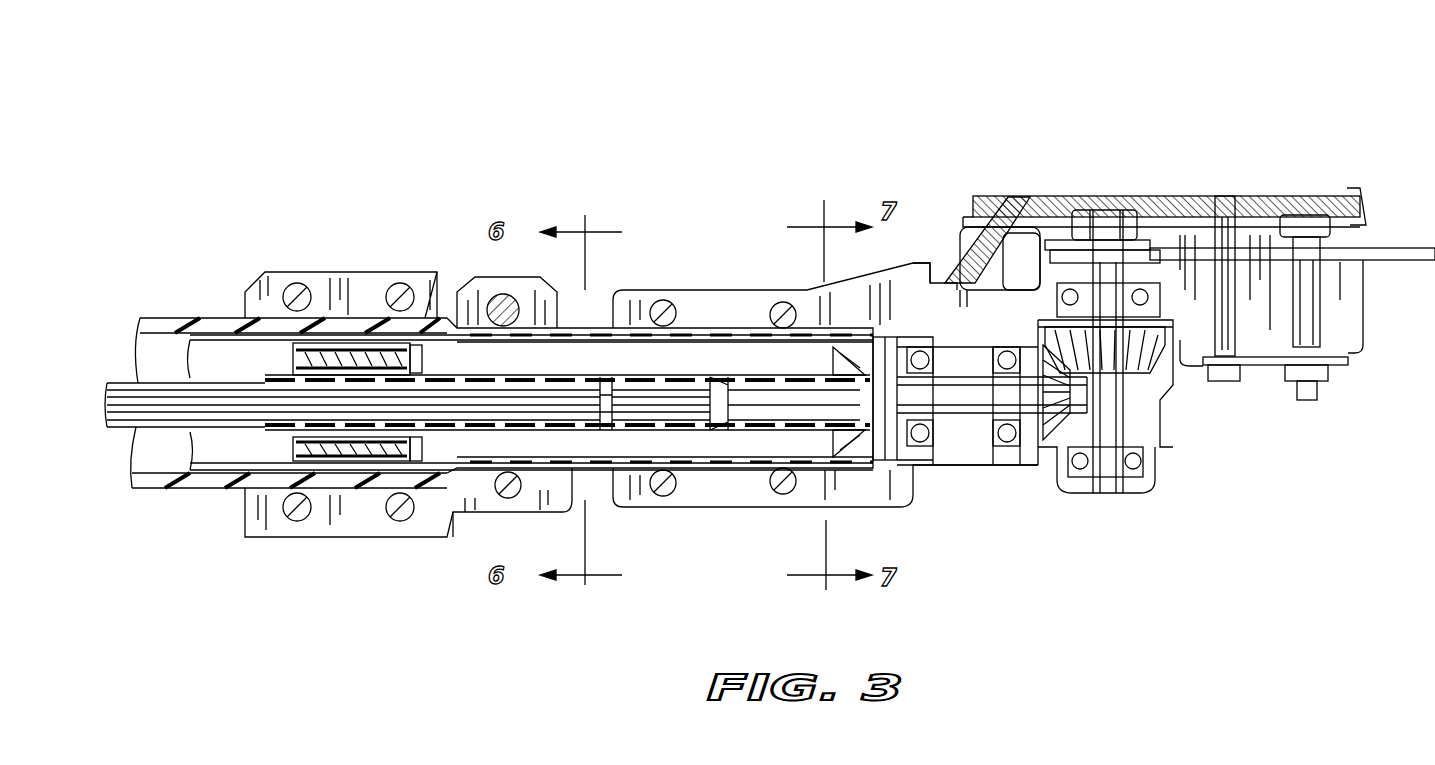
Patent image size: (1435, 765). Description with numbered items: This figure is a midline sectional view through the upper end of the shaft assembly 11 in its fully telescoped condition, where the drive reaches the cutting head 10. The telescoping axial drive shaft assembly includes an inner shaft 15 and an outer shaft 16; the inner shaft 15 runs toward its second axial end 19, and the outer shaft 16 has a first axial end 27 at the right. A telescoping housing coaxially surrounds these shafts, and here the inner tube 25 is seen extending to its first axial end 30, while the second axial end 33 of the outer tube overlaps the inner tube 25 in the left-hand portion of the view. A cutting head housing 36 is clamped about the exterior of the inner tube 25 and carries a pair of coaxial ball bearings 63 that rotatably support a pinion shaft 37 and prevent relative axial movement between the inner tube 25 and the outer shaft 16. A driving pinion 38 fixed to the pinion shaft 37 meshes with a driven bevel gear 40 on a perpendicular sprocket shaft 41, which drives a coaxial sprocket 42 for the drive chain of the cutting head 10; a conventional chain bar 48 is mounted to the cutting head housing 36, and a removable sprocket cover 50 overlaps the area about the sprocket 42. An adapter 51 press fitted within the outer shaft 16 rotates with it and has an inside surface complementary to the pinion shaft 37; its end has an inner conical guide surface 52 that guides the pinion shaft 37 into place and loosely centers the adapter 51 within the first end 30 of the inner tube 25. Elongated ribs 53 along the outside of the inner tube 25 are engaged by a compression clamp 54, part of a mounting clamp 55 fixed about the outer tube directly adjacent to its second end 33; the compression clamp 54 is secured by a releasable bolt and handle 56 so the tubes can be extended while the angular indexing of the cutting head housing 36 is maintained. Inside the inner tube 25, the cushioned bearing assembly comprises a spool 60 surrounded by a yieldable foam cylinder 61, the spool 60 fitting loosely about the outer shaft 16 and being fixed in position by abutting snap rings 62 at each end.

The cutting head 10 is at (1118, 98).
The shaft assembly 11 is at (712, 150).
The inner shaft 15 is at (130, 390).
The outer shaft 16 is at (600, 420).
The second axial end 19 is at (603, 357).
The inner tube 25 is at (203, 465).
The first axial end 27 is at (830, 420).
The first axial end 30 is at (820, 337).
The second axial end 33 is at (436, 297).
The cutting head housing 36 is at (918, 262).
The pinion shaft 37 is at (900, 445).
The driving pinion 38 is at (1053, 450).
The driven bevel gear 40 is at (1153, 360).
The sprocket shaft 41 is at (1060, 270).
The sprocket 42 is at (1078, 248).
The chain bar 48 is at (1412, 247).
The sprocket cover 50 is at (1150, 194).
The adapter 51 is at (875, 447).
The inner conical guide surface 52 is at (833, 353).
The elongated ribs 53 is at (607, 333).
The compression clamp 54 is at (526, 292).
The mounting clamp 55 is at (325, 282).
The releasable bolt and handle 56 is at (494, 278).
The spool 60 is at (293, 356).
The yieldable foam cylinder 61 is at (416, 355).
The snap rings 62 is at (293, 447).
The ball bearings 63 is at (930, 447).